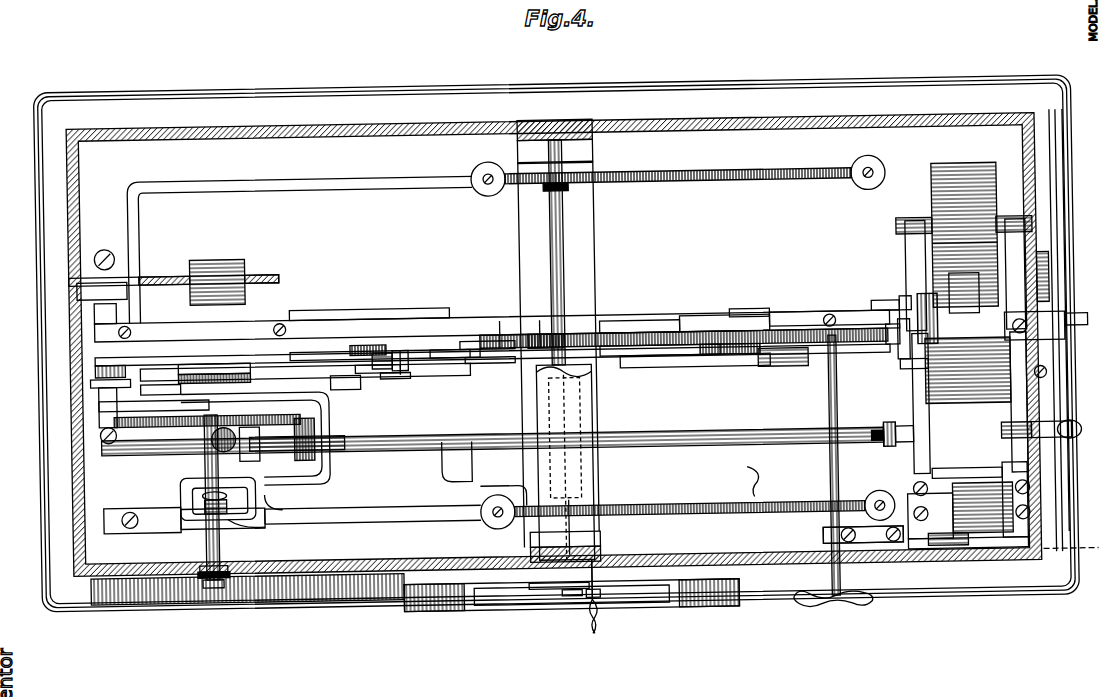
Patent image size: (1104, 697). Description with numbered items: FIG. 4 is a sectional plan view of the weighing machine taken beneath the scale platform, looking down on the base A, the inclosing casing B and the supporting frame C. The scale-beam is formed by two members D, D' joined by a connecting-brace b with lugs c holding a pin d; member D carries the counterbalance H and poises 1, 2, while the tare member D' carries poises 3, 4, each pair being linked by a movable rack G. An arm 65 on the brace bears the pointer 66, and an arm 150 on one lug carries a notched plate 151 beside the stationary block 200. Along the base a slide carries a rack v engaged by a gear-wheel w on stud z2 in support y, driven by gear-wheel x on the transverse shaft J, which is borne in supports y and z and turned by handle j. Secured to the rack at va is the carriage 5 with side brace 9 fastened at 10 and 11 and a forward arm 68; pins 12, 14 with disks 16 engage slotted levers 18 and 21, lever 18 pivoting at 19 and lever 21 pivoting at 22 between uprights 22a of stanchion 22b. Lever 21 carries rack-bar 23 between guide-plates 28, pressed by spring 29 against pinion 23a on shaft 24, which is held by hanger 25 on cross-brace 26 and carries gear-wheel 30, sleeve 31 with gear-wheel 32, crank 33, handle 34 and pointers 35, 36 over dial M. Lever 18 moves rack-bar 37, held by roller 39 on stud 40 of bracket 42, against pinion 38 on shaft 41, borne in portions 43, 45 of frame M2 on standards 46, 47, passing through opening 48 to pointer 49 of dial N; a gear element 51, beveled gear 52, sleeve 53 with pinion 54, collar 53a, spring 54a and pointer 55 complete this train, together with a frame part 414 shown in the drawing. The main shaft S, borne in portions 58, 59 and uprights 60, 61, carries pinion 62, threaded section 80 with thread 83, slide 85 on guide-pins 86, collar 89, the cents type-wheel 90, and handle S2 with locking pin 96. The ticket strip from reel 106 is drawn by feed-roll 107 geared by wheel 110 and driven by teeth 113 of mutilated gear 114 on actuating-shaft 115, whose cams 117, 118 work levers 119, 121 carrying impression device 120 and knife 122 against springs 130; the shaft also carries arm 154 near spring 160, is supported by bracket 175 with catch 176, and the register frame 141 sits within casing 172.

The base A is at (322, 100).
The inclosing casing B is at (237, 121).
The frame or supporting structure C is at (597, 135).
The scale-beam member D is at (300, 249).
The scale-beam member D' is at (373, 528).
The counterbalance or adjusting device H is at (217, 254).
The transverse shaft J is at (828, 470).
The handle or grip j is at (870, 604).
The dial or scale-disk M is at (440, 606).
The dial or scale-disk N is at (108, 598).
The main operating-shaft S is at (707, 433).
The gear-wheel X is at (855, 350).
The movable rack G is at (752, 170).
The horizontal frame M2 is at (286, 497).
The handle S2 is at (1077, 439).
The connecting-brace b is at (598, 254).
The lugs or offsets c is at (568, 330).
The pin d is at (646, 322).
The rack v is at (680, 357).
The attachment point va is at (448, 348).
The gear-wheel w is at (732, 357).
The gear-wheel x is at (1070, 538).
The vertical support y is at (820, 316).
The vertical support z is at (866, 524).
The stud or pin z2 is at (746, 312).
The poise 1 is at (480, 190).
The poise 2 is at (866, 193).
The poise 3 is at (491, 527).
The poise 4 is at (878, 495).
The carriage 5 is at (369, 305).
The side brace 9 is at (400, 348).
The securing points 10 is at (382, 350).
The securing point 11 is at (402, 374).
The pin or axial member 12 is at (378, 372).
The pin or axial member 14 is at (392, 378).
The disks 16 is at (366, 342).
The lever 18 is at (694, 370).
The fulcrum or pivot 19 is at (778, 370).
The lever 21 is at (290, 330).
The fulcrum or pivot 22 is at (95, 352).
The upright portions 22a is at (105, 314).
The stanchion 22b is at (100, 378).
The vertical rack-bar 23 is at (500, 320).
The pinion or gear-wheel 23a is at (540, 320).
The transverse shaft 24 is at (552, 228).
The hanger 25 is at (592, 396).
The cross-brace 26 is at (578, 414).
The guide-plates 28 is at (478, 348).
The spring 29 is at (488, 340).
The gear-wheel 30 is at (572, 186).
The sleeve 31 is at (592, 470).
The gear-wheel 32 is at (620, 507).
The crank 33 is at (560, 590).
The handle 34 is at (596, 630).
The indicating hand or pointer 35 is at (582, 600).
The indicating hand or pointer 36 is at (566, 598).
The rack-bar 37 is at (160, 362).
The pinion or gear-wheel 38 is at (222, 358).
The antifriction-roller 39 is at (154, 410).
The stud or pin 40 is at (100, 400).
The transverse shaft 41 is at (208, 368).
The bracket 42 is at (95, 364).
The frame portion 43 is at (220, 390).
The frame portion 45 is at (200, 516).
The standard 46 is at (165, 386).
The standard 47 is at (156, 510).
The opening 48 is at (224, 562).
The indicating hand or pointer 49 is at (209, 585).
The gear 51 is at (314, 420).
The beveled gear-wheel 52 is at (150, 420).
The sleeve 53 is at (217, 540).
The collar 53a is at (262, 520).
The beveled pinion 54 is at (203, 440).
The spring 54a is at (200, 495).
The indicating hand or pointer 55 is at (226, 572).
The frame portion 58 is at (252, 440).
The frame portion 59 is at (330, 446).
The standard or upright 60 is at (918, 530).
The standard or upright 61 is at (1020, 548).
The beveled pinion 62 is at (224, 470).
The upwardly-extending arm 65 is at (516, 485).
The indicating hand or pointer 66 is at (572, 490).
The forwardly-projecting arm 68 is at (443, 463).
The shaft-section 80 is at (1050, 430).
The screw-threaded portion 83 is at (884, 449).
The slide 85 is at (900, 448).
The guide-pins 86 is at (886, 430).
The collar 89 is at (874, 446).
The cents type-wheel 90 is at (940, 552).
The pin 96 is at (1035, 446).
The roller or reel 106 is at (930, 232).
The feed-roll 107 is at (963, 180).
The gear-wheel 110 is at (975, 556).
The teeth 113 is at (1045, 270).
The mutilated gear-wheel 114 is at (1048, 275).
The actuating-shaft 115 is at (962, 318).
The cam 117 is at (918, 310).
The cam 118 is at (985, 290).
The lever 119 is at (898, 374).
The impression device 120 is at (971, 480).
The lever 121 is at (952, 538).
The knife or cutting device 122 is at (915, 552).
The springs 130 is at (1002, 380).
The frame 141 is at (1054, 382).
The arm or member 150 is at (708, 318).
The vertically-disposed plate 151 is at (884, 306).
The crank or arm 154 is at (895, 297).
The spring 160 is at (898, 372).
The casing 172 is at (1034, 325).
The bracket 175 is at (1068, 310).
The catch 176 is at (1078, 334).
The stationary block or resisting device 200 is at (886, 350).
The frame 414 is at (200, 472).